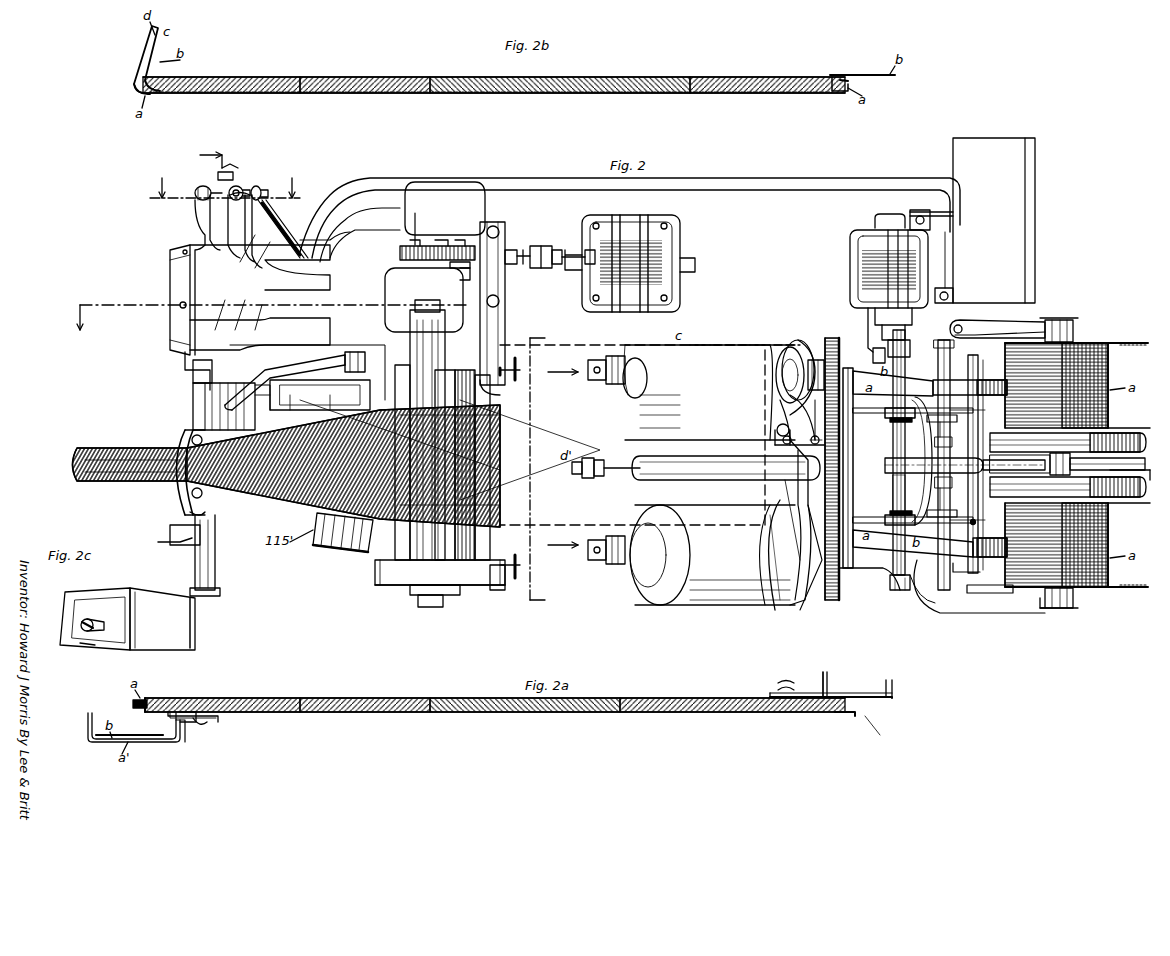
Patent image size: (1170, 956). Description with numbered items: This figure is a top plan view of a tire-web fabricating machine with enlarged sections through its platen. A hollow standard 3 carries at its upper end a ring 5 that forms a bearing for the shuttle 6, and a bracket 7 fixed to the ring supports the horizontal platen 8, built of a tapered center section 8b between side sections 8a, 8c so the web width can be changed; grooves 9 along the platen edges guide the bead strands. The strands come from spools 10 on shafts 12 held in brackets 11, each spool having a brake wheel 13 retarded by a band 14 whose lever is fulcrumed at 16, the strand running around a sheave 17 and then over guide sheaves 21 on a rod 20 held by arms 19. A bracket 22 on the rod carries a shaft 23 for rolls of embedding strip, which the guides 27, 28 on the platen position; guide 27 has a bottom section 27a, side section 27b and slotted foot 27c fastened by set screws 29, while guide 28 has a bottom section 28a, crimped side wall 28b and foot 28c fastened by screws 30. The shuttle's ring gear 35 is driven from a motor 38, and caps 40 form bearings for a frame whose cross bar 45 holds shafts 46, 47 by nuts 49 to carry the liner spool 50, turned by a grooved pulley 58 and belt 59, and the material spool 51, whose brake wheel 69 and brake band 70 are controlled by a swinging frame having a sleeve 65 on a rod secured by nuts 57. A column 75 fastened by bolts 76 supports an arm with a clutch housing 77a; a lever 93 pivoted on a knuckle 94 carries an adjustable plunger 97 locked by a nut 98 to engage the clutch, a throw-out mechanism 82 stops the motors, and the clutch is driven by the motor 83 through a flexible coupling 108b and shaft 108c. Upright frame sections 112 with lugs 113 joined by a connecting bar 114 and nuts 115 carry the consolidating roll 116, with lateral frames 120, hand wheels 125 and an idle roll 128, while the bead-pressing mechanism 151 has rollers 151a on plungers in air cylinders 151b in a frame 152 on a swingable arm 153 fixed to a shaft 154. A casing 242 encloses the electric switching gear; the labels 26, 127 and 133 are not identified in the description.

In FIG. 2, the standard 3 is at (609, 385).
In FIG. 2, the ring 5 is at (846, 368).
In FIG. 2, the shuttle 6 is at (534, 470).
In FIG. 2, the bracket 7 is at (497, 465).
In FIG. 2B, the platen 8 is at (326, 77).
In FIG. 2A, the platen 8 is at (384, 712).
In FIG. 2B, the side section of platen 8a is at (265, 77).
In FIG. 2A, the side section of platen 8a is at (305, 698).
In FIG. 2B, the center section of platen 8b is at (460, 77).
In FIG. 2A, the center section of platen 8b is at (440, 698).
In FIG. 2B, the side section of platen 8c is at (750, 77).
In FIG. 2A, the side section of platen 8c is at (670, 698).
In FIG. 2B, the grooves 9 is at (150, 80).
In FIG. 2A, the grooves 9 is at (150, 700).
In FIG. 2, the grooves 9 is at (224, 193).
In FIG. 2, the spool 10 is at (1095, 343).
In FIG. 2, the brackets 11 is at (1025, 330).
In FIG. 2, the shafts 12 is at (1065, 320).
In FIG. 2, the brake wheels 13 is at (1122, 462).
In FIG. 2, the bands 14 is at (1068, 465).
In FIG. 2, the fulcrum 16 is at (944, 340).
In FIG. 2, the guide sheave 17 is at (930, 512).
In FIG. 2, the arms 19 is at (908, 345).
In FIG. 2, the rod 20 is at (895, 495).
In FIG. 2, the guide sheaves 21 is at (888, 418).
In FIG. 2, the bracket 22 is at (888, 462).
In FIG. 2, the shaft 23 is at (980, 572).
In FIG. 2, the arrow 26 is at (570, 468).
In FIG. 2A, the guide 27 is at (115, 748).
In FIG. 2A, the bottom section 27a is at (185, 745).
In FIG. 2A, the side section 27b is at (168, 731).
In FIG. 2A, the foot 27c is at (185, 700).
In FIG. 2A, the guide 28 is at (885, 700).
In FIG. 2A, the bottom section 28a is at (880, 735).
In FIG. 2A, the side section 28b is at (838, 665).
In FIG. 2C, the side section 28b is at (128, 590).
In FIG. 2A, the foot 28c is at (805, 688).
In FIG. 2C, the foot 28c is at (90, 643).
In FIG. 2A, the set screws 29 is at (200, 722).
In FIG. 2A, the screws 30 is at (780, 686).
In FIG. 2C, the screws 30 is at (95, 619).
In FIG. 2, the ring gear 35 is at (832, 338).
In FIG. 2, the motor 38 is at (855, 248).
In FIG. 2, the caps 40 is at (800, 440).
In FIG. 2, the cross bar 45 is at (775, 420).
In FIG. 2, the shaft 46 is at (606, 362).
In FIG. 2, the shaft 47 is at (590, 556).
In FIG. 2, the nuts 49 is at (814, 360).
In FIG. 2, the spool 50 is at (775, 350).
In FIG. 2, the spool 51 is at (628, 575).
In FIG. 2, the nuts 57 is at (612, 476).
In FIG. 2, the grooved pulley 58 is at (795, 345).
In FIG. 2, the belt 59 is at (790, 398).
In FIG. 2, the sleeve 65 is at (720, 470).
In FIG. 2, the brake wheel 69 is at (785, 605).
In FIG. 2, the brake band 70 is at (800, 518).
In FIG. 2, the column 75 is at (427, 300).
In FIG. 2, the bolts 76 is at (498, 225).
In FIG. 2, the housing 77a is at (250, 292).
In FIG. 2, the automatic throw-out and stopping mechanism 82 is at (249, 183).
In FIG. 2, the motor 83 is at (672, 240).
In FIG. 2, the lever 93 is at (283, 229).
In FIG. 2, the knuckle 94 is at (205, 186).
In FIG. 2, the plunger 97 is at (230, 172).
In FIG. 2, the nut 98 is at (248, 159).
In FIG. 2, the flexible coupling 108b is at (543, 246).
In FIG. 2, the shaft 108c is at (512, 250).
In FIG. 2, the upright frame sections 112 is at (378, 578).
In FIG. 2, the hollow lugs 113 is at (410, 365).
In FIG. 2, the connecting bar 114 is at (440, 400).
In FIG. 2, the nuts 115 is at (418, 600).
In FIG. 2, the roll 116 is at (375, 383).
In FIG. 2, the supplemental frames 120 is at (478, 375).
In FIG. 2, the hand wheels 125 is at (516, 358).
In FIG. 2, the strip 127 is at (400, 254).
In FIG. 2, the idle roll 128 is at (502, 389).
In FIG. 2, the fitting 133 is at (465, 246).
In FIG. 2, the bead compressing mechanism 151 is at (182, 445).
In FIG. 2, the rollers 151a is at (192, 438).
In FIG. 2, the cylinders 151b is at (193, 370).
In FIG. 2, the frame 152 is at (185, 490).
In FIG. 2, the swingable arm 153 is at (285, 372).
In FIG. 2, the shaft 154 is at (352, 368).
In FIG. 2, the casing 242 is at (1027, 240).